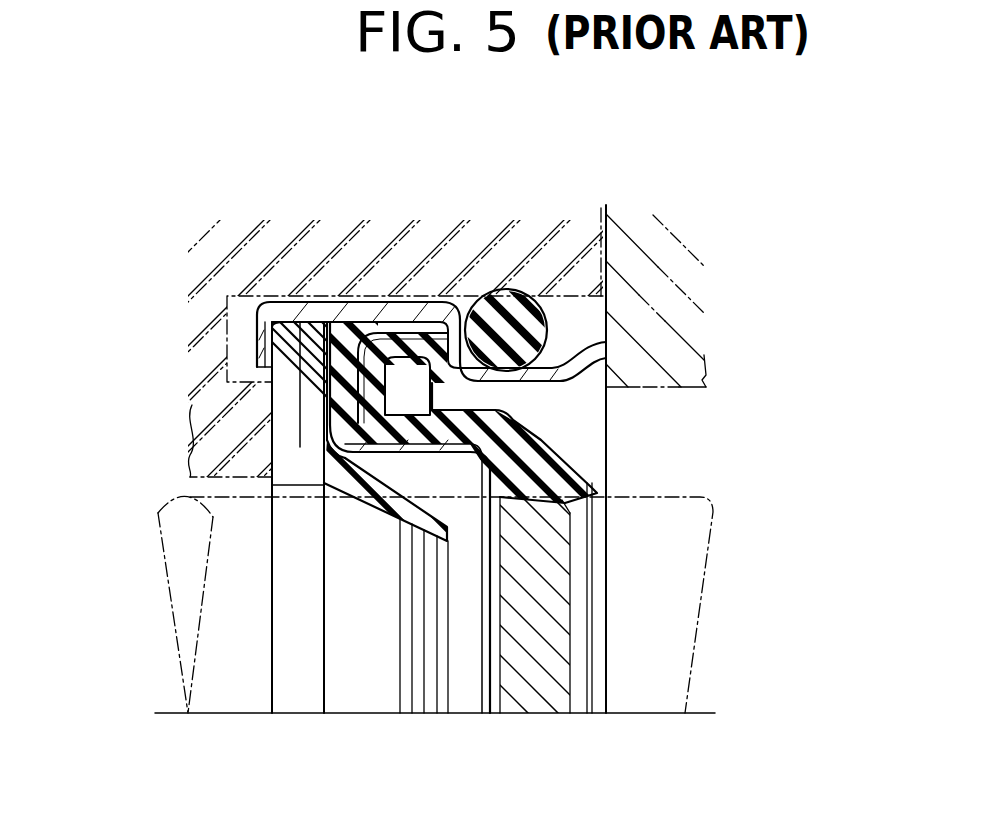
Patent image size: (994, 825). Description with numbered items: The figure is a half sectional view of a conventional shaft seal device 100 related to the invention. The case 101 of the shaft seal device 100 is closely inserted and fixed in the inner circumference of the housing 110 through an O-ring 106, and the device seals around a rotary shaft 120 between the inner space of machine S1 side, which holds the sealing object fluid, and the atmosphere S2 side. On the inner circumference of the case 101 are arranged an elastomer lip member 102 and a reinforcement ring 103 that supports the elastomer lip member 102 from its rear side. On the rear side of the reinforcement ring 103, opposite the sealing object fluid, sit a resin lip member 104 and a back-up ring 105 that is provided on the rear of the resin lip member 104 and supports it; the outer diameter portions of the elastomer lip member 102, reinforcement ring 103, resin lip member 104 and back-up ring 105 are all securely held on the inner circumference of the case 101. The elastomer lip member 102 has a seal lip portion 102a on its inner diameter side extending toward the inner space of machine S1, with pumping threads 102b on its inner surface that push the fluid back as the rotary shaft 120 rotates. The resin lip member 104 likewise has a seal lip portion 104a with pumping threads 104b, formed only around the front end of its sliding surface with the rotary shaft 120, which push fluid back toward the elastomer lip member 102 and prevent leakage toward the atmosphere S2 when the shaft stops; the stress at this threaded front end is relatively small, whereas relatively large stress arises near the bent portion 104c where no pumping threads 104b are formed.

The shaft seal device 100 is at (391, 295).
The case 101 is at (347, 310).
The elastomer lip member 102 is at (606, 318).
The seal lip portion 102a is at (610, 497).
The pumping threads 102b is at (540, 612).
The reinforcement ring 103 is at (447, 460).
The resin lip member 104 is at (372, 515).
The seal lip portion 104a is at (390, 512).
The pumping threads 104b is at (430, 565).
The bent portion 104c is at (343, 485).
The back-up ring 105 is at (285, 413).
The O-ring 106 is at (497, 430).
The housing 110 is at (243, 268).
The rotary shaft 120 is at (186, 560).
The inner space of machine S1 is at (737, 452).
The atmosphere S2 is at (152, 467).